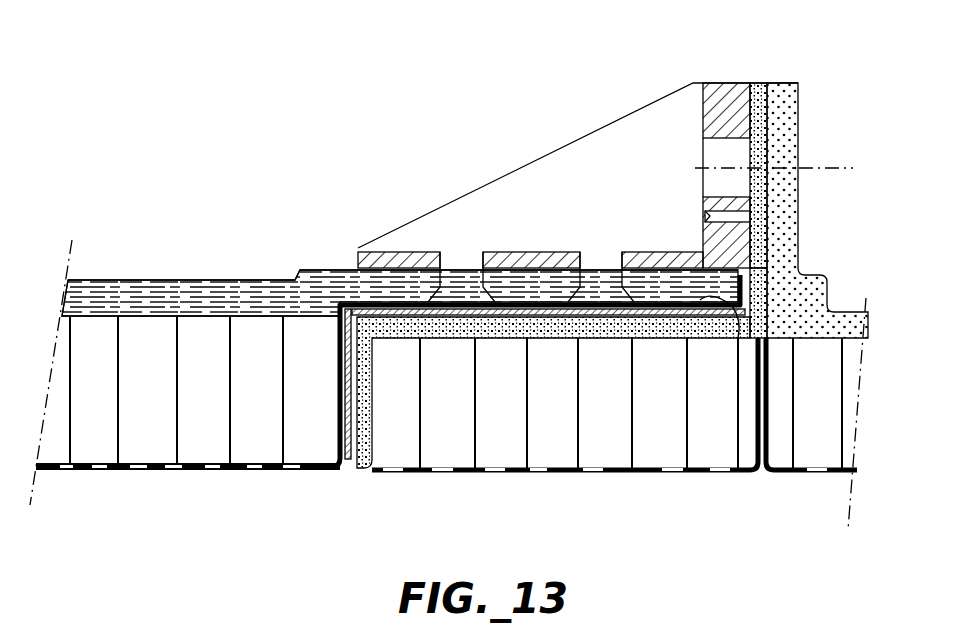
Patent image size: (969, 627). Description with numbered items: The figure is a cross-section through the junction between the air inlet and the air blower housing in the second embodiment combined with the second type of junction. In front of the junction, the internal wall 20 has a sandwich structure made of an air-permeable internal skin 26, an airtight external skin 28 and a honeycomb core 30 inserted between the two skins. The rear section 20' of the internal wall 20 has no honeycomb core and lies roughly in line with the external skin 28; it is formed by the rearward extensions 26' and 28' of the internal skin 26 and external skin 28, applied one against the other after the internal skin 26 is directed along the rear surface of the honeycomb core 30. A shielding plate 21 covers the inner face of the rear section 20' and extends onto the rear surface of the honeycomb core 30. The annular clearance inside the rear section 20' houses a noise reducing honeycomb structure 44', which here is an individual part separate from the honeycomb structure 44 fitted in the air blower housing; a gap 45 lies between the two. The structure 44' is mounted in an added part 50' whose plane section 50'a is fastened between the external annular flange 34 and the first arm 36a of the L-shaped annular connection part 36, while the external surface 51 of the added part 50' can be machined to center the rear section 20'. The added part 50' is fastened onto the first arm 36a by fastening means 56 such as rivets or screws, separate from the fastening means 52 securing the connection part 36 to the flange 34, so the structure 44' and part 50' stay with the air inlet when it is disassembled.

The internal wall 20 is at (386, 366).
The shielding plate 21 is at (348, 300).
The air-permeable internal skin 26 is at (187, 499).
The airtight external skin 28 is at (400, 256).
The honeycomb core 30 is at (197, 427).
The gap 45 is at (348, 440).
The honeycomb structure 44 is at (774, 436).
The noise reducing honeycomb structure 44' is at (565, 435).
The added part 50' is at (553, 392).
The plane section 50'a is at (810, 287).
The external surface 51 is at (738, 338).
The rear section 20' is at (604, 169).
The extension of internal skin 26' is at (531, 248).
The extension of external skin 28' is at (520, 218).
The external annular flange 34 is at (786, 105).
The annular connection part 36 is at (671, 82).
The first arm 36a is at (722, 112).
The fastening means 52 is at (822, 168).
The fastening means 56 is at (750, 216).